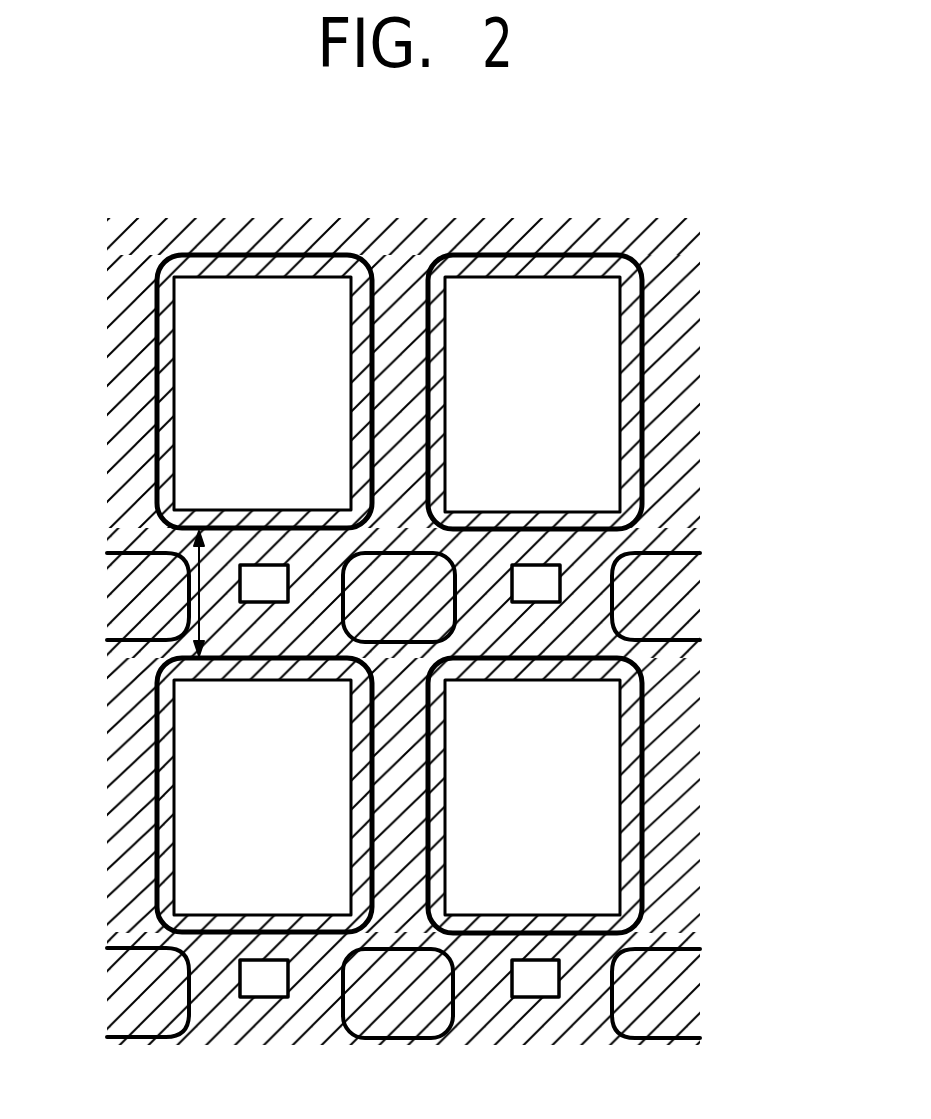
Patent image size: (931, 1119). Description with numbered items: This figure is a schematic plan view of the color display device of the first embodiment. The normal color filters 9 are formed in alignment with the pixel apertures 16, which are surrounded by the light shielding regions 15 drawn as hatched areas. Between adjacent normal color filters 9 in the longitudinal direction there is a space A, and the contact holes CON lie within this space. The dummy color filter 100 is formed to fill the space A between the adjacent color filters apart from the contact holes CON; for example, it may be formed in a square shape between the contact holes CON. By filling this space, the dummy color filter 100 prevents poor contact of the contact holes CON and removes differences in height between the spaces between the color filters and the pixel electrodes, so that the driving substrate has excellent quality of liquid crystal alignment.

The normal color filter 9 is at (157, 437).
The light shielding region 15 is at (597, 240).
The aperture 16 is at (177, 360).
The dummy color filter 100 is at (458, 573).
The contact hole CON is at (557, 584).
The space between adjacent color filters A is at (209, 593).